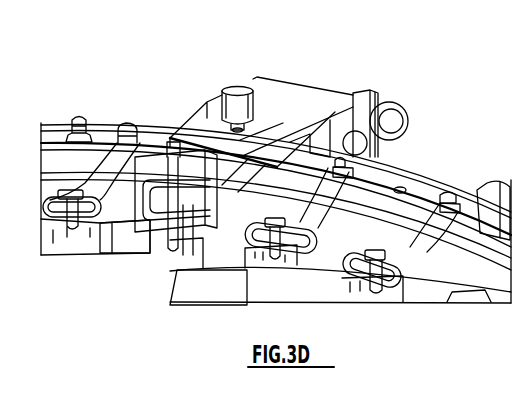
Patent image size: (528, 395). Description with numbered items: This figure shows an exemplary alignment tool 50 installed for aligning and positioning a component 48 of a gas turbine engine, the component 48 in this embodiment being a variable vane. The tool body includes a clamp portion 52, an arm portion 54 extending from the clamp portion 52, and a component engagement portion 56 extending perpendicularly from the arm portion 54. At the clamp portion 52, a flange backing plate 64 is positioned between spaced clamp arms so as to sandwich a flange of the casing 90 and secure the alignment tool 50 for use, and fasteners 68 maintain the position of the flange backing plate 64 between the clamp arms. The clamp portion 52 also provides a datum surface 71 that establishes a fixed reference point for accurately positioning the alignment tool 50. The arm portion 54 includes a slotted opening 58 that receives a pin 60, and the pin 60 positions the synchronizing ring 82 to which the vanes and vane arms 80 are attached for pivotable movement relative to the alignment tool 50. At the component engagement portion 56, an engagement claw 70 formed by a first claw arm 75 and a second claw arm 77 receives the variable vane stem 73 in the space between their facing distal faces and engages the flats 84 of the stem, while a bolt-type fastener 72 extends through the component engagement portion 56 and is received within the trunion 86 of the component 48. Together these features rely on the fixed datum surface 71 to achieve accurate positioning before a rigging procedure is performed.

The component 48 is at (172, 286).
The alignment tool 50 is at (317, 68).
The clamp portion 52 is at (344, 90).
The arm portion 54 is at (291, 107).
The component engagement portion 56 is at (90, 218).
The slotted opening 58 is at (242, 127).
The pin 60 is at (237, 100).
The flange backing plate 64 is at (381, 108).
The fasteners 68 is at (397, 123).
The engagement claw 70 is at (216, 178).
The datum surface 71 is at (360, 154).
The fastener 72 is at (173, 142).
The variable vane stem 73 is at (192, 220).
The first claw arm 75 is at (223, 190).
The second claw arm 77 is at (118, 240).
The vane arms 80 is at (113, 150).
The synchronizing ring 82 is at (437, 174).
The flats 84 is at (177, 250).
The trunion 86 is at (220, 186).
The casing 90 is at (445, 168).